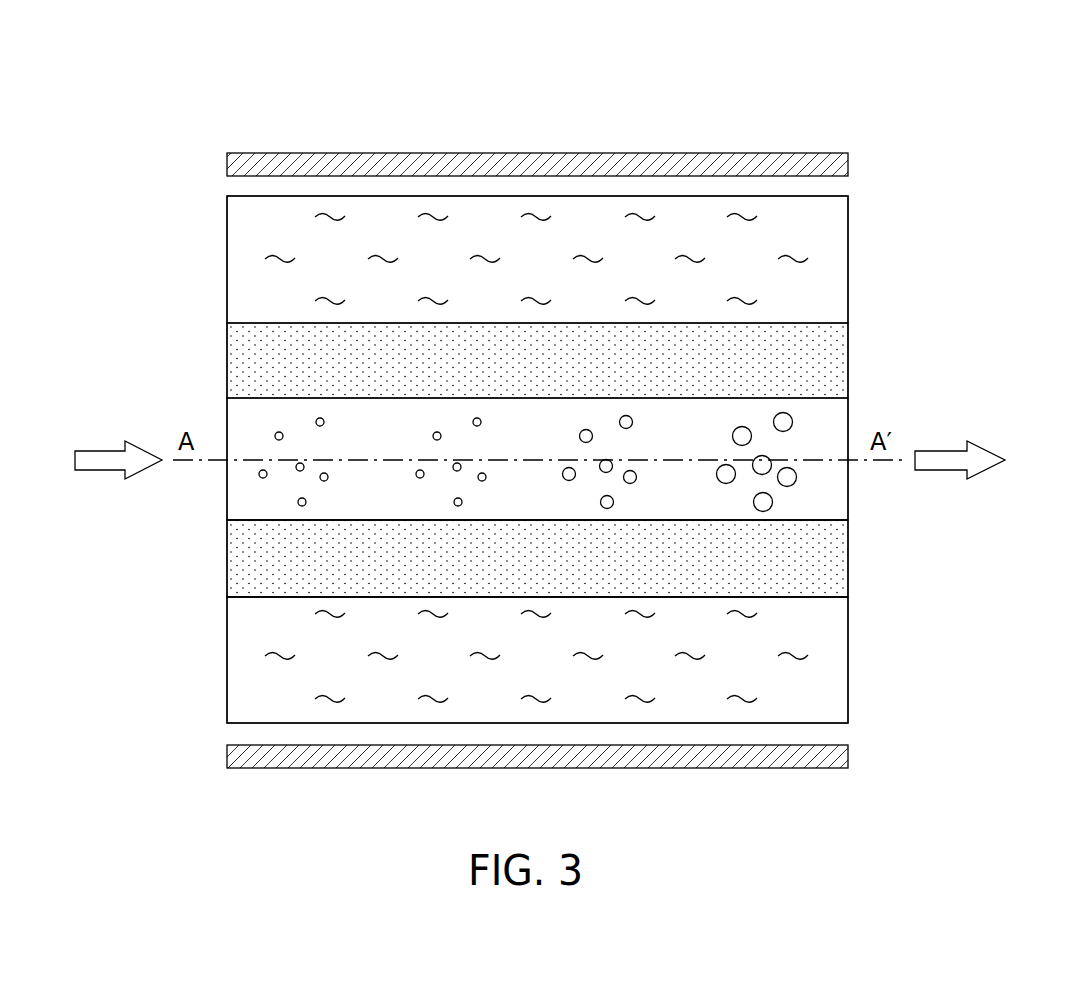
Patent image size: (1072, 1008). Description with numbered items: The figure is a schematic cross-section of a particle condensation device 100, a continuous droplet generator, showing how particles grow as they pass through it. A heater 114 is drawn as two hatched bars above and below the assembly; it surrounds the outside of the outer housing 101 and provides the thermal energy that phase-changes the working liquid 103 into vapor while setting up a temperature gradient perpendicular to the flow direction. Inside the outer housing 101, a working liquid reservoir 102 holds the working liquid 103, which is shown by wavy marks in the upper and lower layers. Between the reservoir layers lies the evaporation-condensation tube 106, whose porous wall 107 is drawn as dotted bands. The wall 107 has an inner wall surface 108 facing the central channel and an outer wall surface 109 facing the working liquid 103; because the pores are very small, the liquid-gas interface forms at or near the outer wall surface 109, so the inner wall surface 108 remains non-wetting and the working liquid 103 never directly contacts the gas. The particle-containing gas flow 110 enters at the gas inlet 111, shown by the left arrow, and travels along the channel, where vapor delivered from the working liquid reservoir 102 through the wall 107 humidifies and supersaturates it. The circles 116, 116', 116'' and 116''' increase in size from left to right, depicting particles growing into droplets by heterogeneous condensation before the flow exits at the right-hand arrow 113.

The particle condensation device 100 is at (432, 405).
The outer housing 101 is at (472, 247).
The working liquid reservoir 102 is at (838, 216).
The working liquid 103 is at (642, 216).
The evaporation-condensation tube 106 is at (468, 459).
The wall of the evaporation-condensation tube 107 is at (838, 360).
The inner wall surface 108 is at (385, 520).
The outer wall surface 109 is at (383, 597).
The particle-containing gas flow 110 is at (838, 492).
The gas inlet 111 is at (75, 457).
The transmitted light 113 is at (998, 453).
The heater 114 is at (768, 153).
The particles 116 is at (290, 454).
The particles (second size) 116' is at (445, 454).
The particles (third size) 116'' is at (596, 456).
The particles (fourth size) 116''' is at (748, 457).